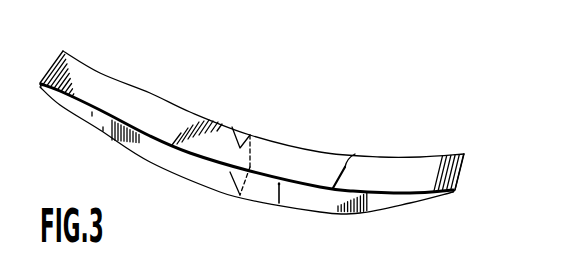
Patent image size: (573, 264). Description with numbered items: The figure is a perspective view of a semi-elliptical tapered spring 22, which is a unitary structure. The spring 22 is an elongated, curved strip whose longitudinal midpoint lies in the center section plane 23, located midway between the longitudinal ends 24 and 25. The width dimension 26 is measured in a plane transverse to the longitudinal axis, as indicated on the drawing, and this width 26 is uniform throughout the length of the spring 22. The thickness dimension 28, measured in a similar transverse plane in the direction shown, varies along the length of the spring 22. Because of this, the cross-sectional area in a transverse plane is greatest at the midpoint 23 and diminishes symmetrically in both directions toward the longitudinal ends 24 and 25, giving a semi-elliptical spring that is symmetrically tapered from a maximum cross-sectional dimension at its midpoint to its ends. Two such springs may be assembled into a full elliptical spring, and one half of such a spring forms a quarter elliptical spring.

The spring 22 is at (427, 206).
The center section plane 23 is at (240, 148).
The longitudinal end 24 is at (51, 69).
The longitudinal end 25 is at (466, 158).
The width dimension 26 is at (346, 165).
The thickness dimension 28 is at (285, 194).